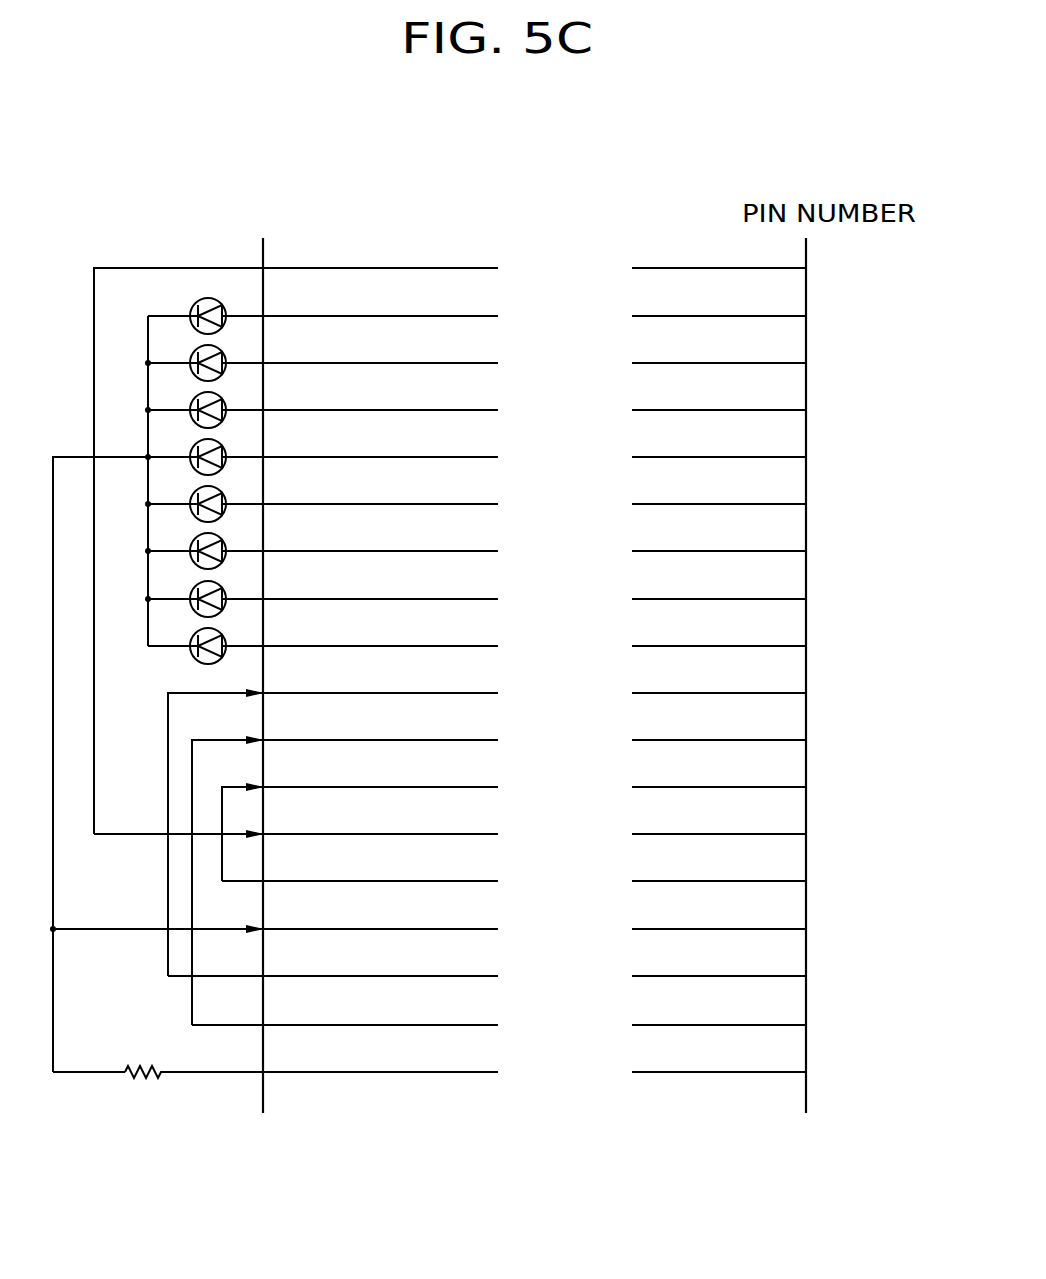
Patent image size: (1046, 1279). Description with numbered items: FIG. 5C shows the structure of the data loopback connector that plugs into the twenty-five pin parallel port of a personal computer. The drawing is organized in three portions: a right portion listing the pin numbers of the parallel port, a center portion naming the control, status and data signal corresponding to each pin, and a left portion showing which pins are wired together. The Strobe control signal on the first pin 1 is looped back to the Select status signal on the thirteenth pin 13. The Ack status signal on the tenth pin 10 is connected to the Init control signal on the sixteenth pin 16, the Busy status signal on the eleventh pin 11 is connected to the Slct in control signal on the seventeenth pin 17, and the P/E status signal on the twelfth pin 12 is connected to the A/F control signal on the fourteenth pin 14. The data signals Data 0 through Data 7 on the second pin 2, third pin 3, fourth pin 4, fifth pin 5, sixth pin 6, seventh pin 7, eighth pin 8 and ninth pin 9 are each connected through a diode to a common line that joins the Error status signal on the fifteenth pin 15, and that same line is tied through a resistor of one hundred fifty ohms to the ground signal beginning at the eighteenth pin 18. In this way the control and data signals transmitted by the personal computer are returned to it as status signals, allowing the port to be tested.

The first pin 1 is at (463, 544).
The second pin 2 is at (490, 316).
The third pin 3 is at (490, 363).
The fourth pin 4 is at (490, 410).
The fifth pin 5 is at (441, 755).
The sixth pin 6 is at (490, 504).
The seventh pin 7 is at (490, 551).
The eighth pin 8 is at (490, 599).
The ninth pin 9 is at (490, 646).
The tenth pin 10 is at (508, 827).
The eleventh pin 11 is at (520, 875).
The twelfth pin 12 is at (535, 827).
The thirteenth pin 13 is at (471, 834).
The fourteenth pin 14 is at (535, 881).
The fifteenth pin 15 is at (450, 929).
The sixteenth pin 16 is at (508, 976).
The seventeenth pin 17 is at (520, 1025).
The eighteenth pin 18 is at (480, 1086).